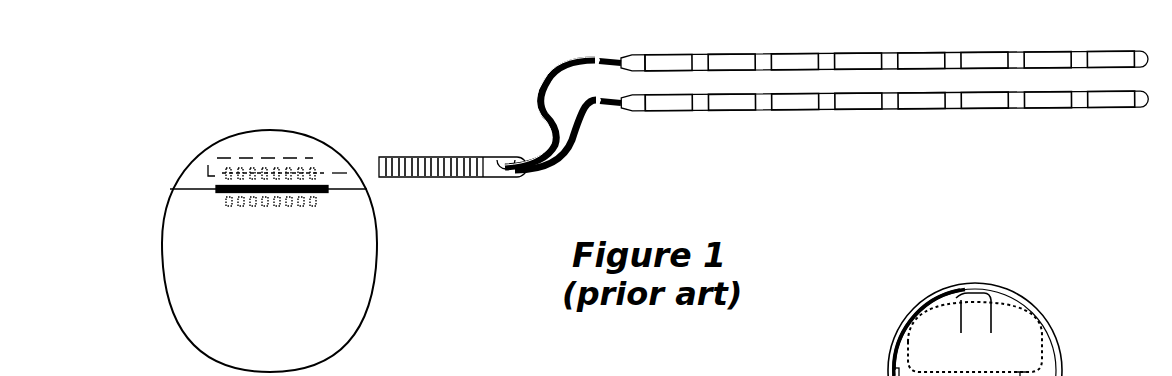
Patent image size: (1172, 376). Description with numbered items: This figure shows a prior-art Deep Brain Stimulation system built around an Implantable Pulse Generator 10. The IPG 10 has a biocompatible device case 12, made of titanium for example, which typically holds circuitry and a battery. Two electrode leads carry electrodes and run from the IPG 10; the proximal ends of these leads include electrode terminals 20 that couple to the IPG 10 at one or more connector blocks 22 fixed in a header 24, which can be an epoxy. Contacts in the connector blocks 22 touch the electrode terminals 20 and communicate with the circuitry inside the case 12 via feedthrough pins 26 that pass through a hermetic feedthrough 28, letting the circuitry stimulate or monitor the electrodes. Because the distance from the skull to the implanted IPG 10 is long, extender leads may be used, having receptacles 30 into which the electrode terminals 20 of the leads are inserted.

The Implantable Pulse Generator 10 is at (178, 129).
The device case 12 is at (368, 293).
The electrode terminals 20 is at (430, 177).
The connector blocks 22 is at (327, 158).
The header 24 is at (173, 177).
The feedthrough pins 26 is at (312, 198).
The hermetic feedthrough 28 is at (222, 197).
The receptacles 30 is at (945, 318).